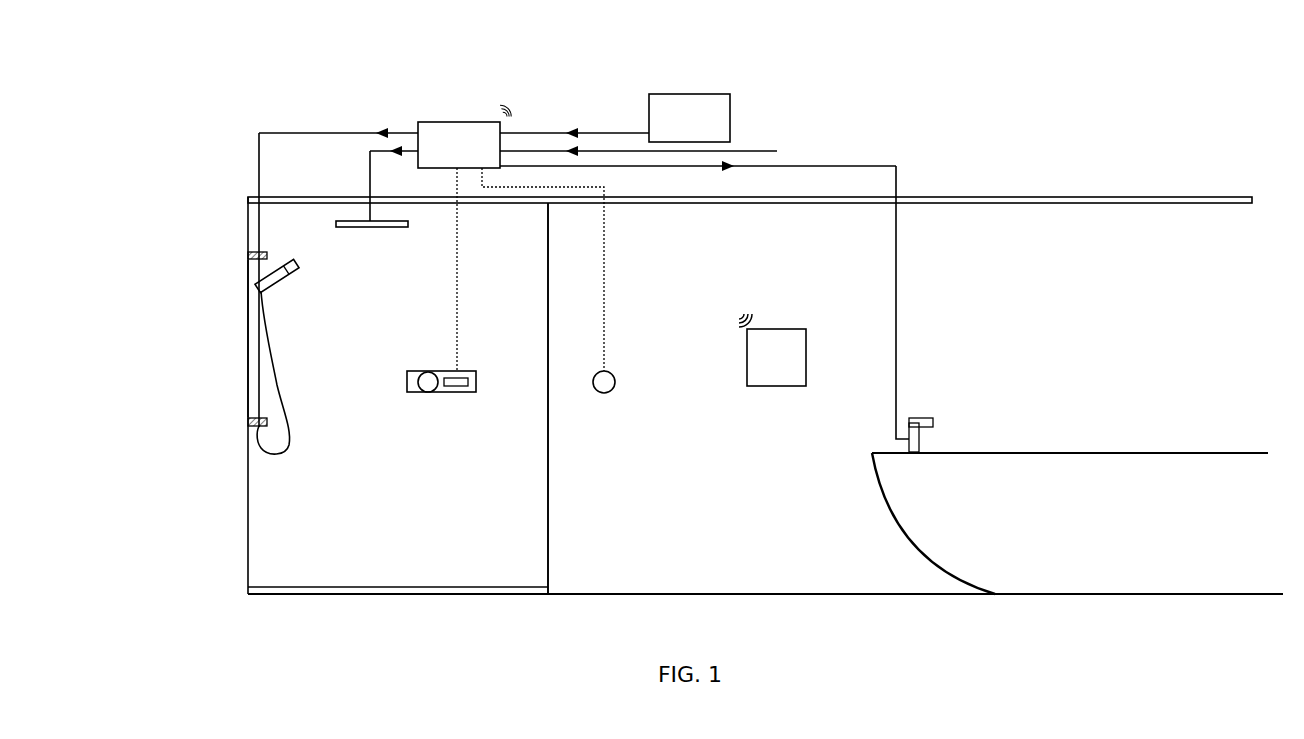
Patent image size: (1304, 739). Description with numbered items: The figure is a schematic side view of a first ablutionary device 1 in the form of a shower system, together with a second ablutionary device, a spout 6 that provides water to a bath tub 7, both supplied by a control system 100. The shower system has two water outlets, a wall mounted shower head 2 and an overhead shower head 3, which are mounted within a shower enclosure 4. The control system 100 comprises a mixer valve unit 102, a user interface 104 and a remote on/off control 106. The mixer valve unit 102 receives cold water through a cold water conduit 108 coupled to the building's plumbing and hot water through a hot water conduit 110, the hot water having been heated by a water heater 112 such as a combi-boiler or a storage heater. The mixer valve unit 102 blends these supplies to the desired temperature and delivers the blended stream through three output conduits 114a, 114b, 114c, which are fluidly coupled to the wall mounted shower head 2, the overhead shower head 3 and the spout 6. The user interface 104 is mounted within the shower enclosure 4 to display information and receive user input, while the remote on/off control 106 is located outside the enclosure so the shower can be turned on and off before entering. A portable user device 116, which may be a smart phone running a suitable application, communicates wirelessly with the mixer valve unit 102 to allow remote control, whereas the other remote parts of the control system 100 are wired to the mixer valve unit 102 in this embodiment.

The first ablutionary device 1 is at (190, 366).
The wall mounted shower head 2 is at (250, 276).
The overhead shower head 3 is at (393, 228).
The shower enclosure 4 is at (548, 530).
The spout 6 is at (933, 418).
The bath tub 7 is at (1070, 523).
The control system 100 is at (433, 83).
The mixer valve unit 102 is at (464, 136).
The user interface 104 is at (465, 393).
The remote on/off control 106 is at (613, 390).
The cold water conduit 108 is at (768, 150).
The hot water conduit 110 is at (551, 131).
The water heater 112 is at (689, 118).
The output conduit 114a is at (281, 131).
The output conduit 114b is at (370, 178).
The output conduit 114c is at (858, 166).
The portable user device 116 is at (772, 350).